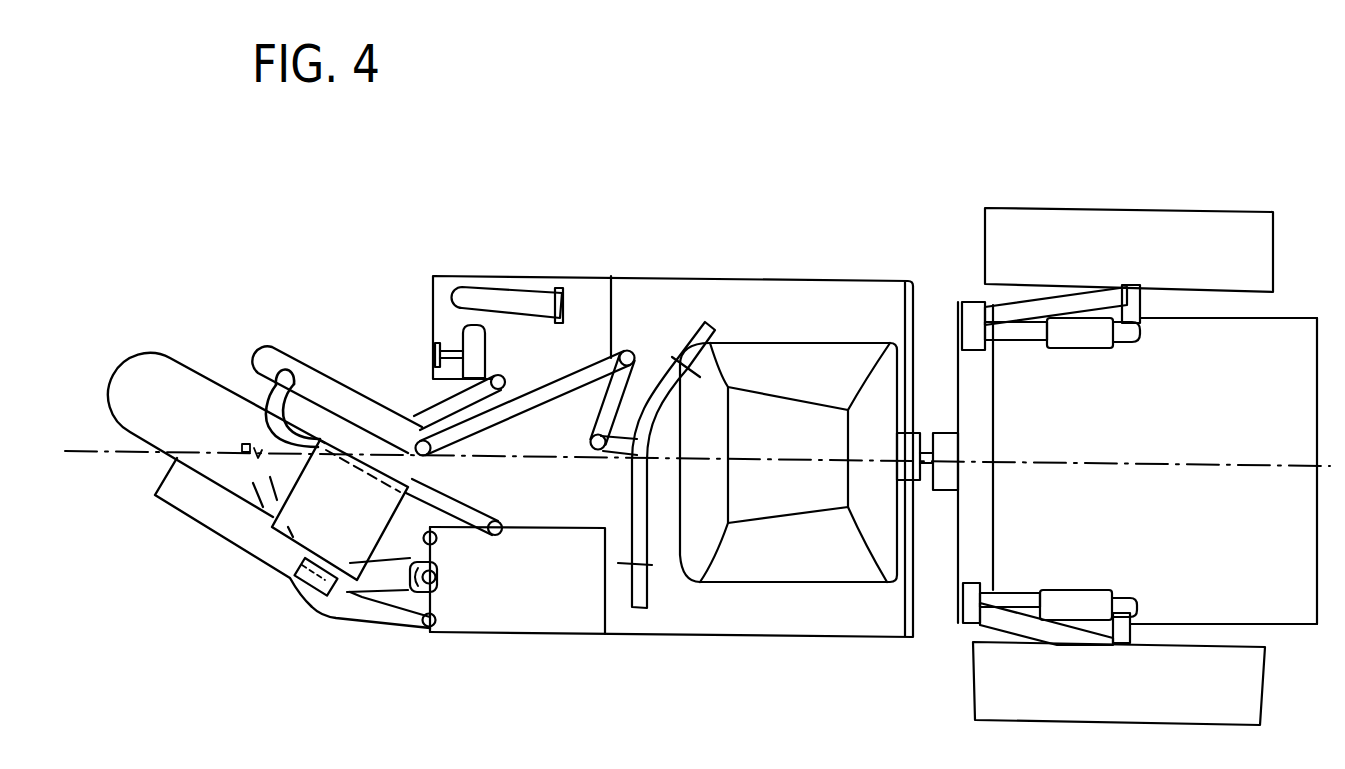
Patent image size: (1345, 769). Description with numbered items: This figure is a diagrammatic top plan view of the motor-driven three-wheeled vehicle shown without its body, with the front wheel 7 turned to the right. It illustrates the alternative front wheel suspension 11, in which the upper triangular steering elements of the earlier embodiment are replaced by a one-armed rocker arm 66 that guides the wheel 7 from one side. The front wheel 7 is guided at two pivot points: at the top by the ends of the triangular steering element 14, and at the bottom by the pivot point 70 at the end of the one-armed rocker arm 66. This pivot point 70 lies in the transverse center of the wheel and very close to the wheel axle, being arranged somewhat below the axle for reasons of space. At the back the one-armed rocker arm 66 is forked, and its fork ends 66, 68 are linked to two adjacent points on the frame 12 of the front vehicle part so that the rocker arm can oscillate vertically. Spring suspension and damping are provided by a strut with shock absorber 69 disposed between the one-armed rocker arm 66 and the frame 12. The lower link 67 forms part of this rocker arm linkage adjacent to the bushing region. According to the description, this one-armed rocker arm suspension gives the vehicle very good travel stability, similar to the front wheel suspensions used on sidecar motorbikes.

The front wheel 7 is at (145, 395).
The front wheel suspension 11 is at (228, 579).
The frame 12 is at (553, 614).
The triangular steering element 14 is at (423, 412).
The one-armed rocker arm 66 is at (303, 603).
The lower link 67 is at (380, 625).
The fork end 68 is at (432, 562).
The strut with shock absorber 69 is at (392, 582).
The pivot point 70 is at (248, 443).